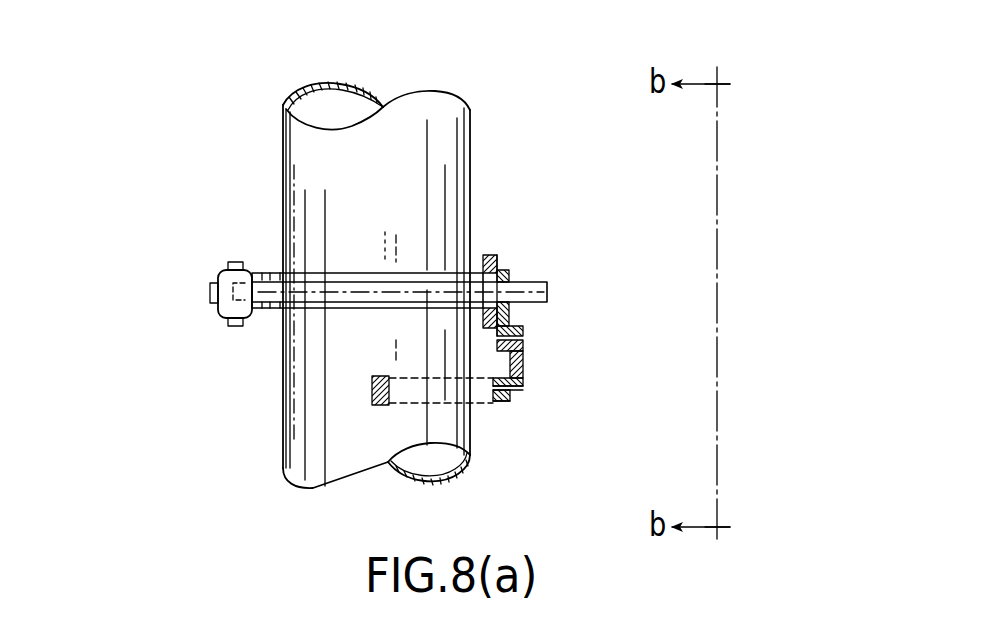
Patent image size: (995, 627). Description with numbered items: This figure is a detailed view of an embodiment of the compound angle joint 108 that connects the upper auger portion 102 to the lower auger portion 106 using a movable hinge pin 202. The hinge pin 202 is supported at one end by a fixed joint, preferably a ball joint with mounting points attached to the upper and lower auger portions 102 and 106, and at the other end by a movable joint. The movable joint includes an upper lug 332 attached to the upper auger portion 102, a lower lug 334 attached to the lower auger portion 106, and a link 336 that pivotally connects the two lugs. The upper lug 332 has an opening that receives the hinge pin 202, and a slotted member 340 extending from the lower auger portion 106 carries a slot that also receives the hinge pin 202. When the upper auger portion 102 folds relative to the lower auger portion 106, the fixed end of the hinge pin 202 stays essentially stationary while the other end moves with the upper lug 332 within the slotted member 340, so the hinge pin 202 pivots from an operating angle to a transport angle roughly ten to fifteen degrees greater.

The upper auger portion 102 is at (283, 137).
The lower auger portion 106 is at (283, 430).
The hinge pin 202 is at (360, 273).
The compound angle joint 108 is at (530, 231).
The slotted member 340 is at (487, 255).
The upper lug 332 is at (510, 272).
The link 336 is at (523, 356).
The lower lug 334 is at (503, 403).